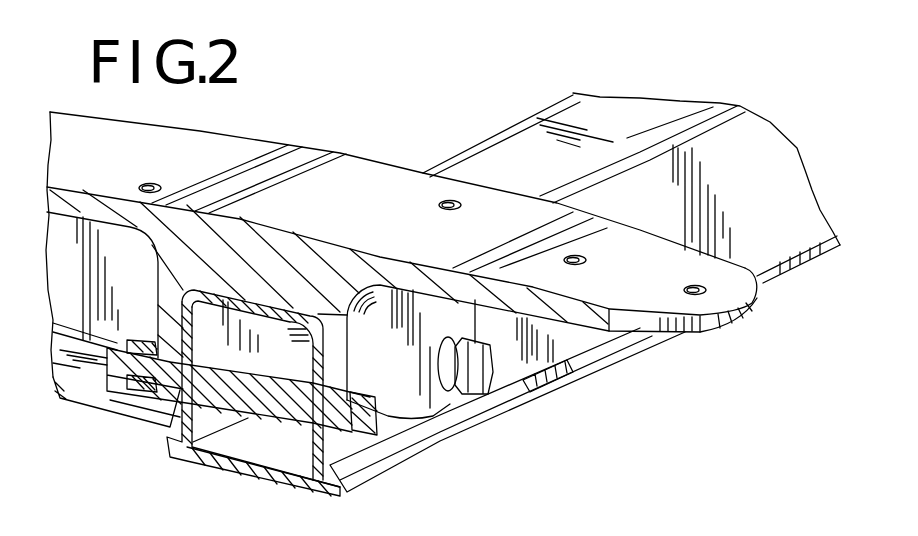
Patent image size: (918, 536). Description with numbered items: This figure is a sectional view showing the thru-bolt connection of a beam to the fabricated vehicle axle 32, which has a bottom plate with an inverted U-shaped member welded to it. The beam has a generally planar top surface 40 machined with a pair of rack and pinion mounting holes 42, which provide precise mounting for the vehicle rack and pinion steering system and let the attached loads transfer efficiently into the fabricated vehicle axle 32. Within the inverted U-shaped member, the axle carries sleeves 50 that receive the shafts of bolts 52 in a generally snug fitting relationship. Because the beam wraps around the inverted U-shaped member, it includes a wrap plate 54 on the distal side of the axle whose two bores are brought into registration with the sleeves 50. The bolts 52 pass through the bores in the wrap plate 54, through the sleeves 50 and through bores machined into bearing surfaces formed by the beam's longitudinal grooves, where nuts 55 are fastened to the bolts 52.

The fabricated vehicle axle 32 is at (263, 302).
The top surface 40 is at (171, 169).
The rack and pinion mounting holes 42 is at (708, 293).
The sleeves 50 is at (301, 348).
The bolts 52 is at (481, 385).
The wrap plate 54 is at (407, 357).
The nuts 55 is at (140, 386).